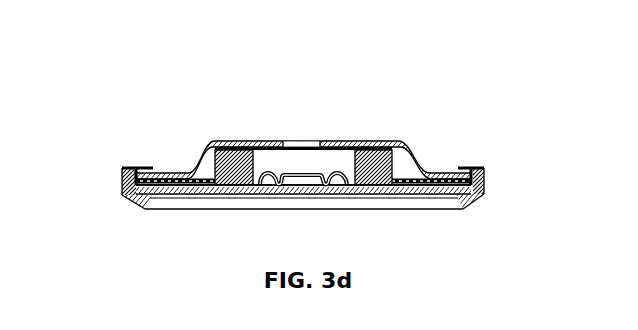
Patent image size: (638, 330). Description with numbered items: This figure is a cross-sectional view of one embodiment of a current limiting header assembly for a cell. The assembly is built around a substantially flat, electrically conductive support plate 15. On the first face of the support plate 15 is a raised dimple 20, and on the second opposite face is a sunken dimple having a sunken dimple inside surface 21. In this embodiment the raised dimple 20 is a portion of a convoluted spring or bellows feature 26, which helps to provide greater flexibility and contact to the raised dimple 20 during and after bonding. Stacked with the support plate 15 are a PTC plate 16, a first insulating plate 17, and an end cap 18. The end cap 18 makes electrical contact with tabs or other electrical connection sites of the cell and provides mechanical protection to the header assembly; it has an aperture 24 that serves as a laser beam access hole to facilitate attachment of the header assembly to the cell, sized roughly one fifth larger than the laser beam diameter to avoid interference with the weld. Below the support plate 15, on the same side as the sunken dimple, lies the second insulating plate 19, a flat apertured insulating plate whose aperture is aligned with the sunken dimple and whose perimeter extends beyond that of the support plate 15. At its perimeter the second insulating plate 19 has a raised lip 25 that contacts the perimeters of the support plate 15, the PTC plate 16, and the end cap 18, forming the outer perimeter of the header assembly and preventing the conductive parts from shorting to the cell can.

The support plate 15 is at (188, 195).
The PTC plate 16 is at (437, 175).
The first insulating plate 17 is at (215, 163).
The end cap 18 is at (240, 143).
The second insulating plate 19 is at (372, 195).
The raised dimple 20 is at (303, 176).
The sunken dimple inside surface 21 is at (287, 187).
The aperture 24 is at (297, 143).
The raised lip 25 is at (483, 197).
The convoluted spring or bellows feature 26 is at (270, 183).